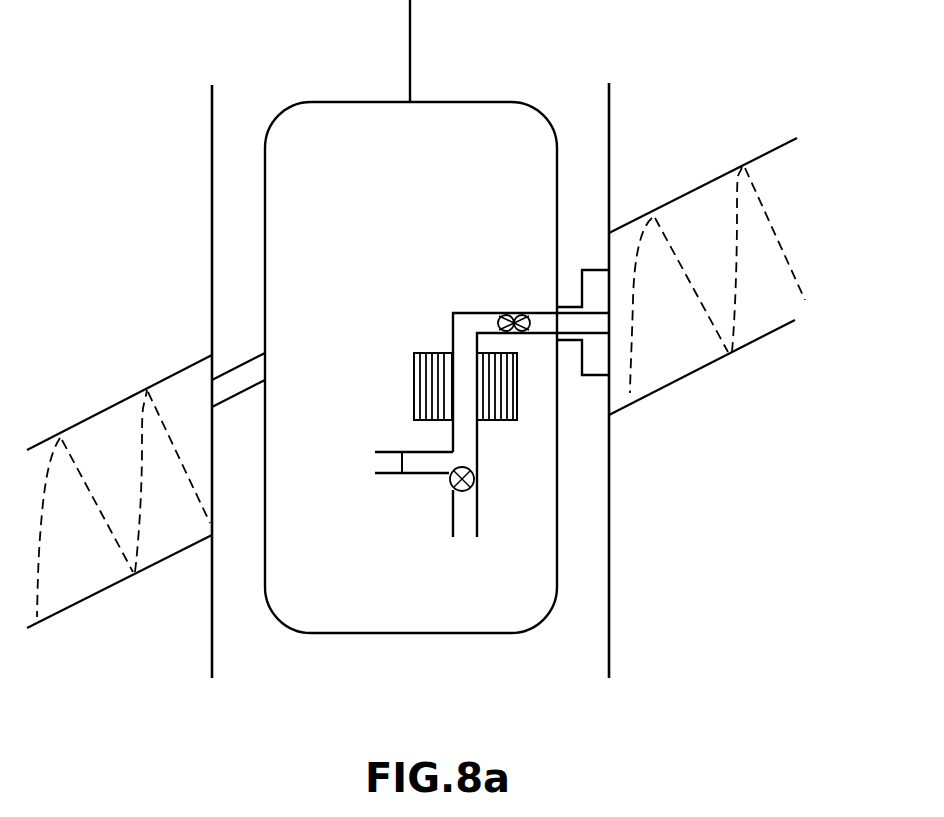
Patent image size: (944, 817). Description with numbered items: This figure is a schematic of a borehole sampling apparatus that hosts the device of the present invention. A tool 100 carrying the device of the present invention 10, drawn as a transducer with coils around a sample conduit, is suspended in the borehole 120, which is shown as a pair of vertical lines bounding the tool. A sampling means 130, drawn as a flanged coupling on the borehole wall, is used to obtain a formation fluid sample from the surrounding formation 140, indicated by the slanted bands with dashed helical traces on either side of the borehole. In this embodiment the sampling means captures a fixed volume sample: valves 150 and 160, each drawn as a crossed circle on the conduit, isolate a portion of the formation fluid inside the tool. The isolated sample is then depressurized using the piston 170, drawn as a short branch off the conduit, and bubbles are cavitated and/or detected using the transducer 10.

The tool 100 is at (370, 102).
The borehole 120 is at (592, 100).
The formation 140 is at (745, 100).
The valve 160 is at (513, 313).
The device of the present invention 10 is at (414, 388).
The piston 170 is at (400, 462).
The valve 150 is at (474, 463).
The sampling means 130 is at (592, 375).